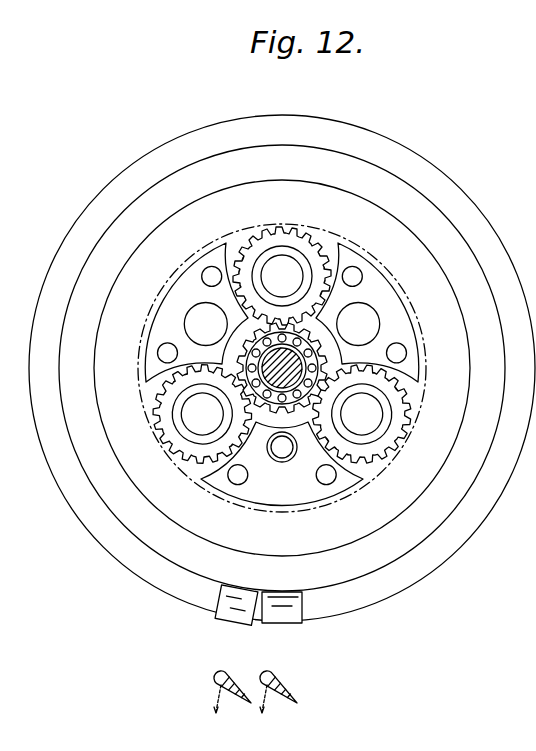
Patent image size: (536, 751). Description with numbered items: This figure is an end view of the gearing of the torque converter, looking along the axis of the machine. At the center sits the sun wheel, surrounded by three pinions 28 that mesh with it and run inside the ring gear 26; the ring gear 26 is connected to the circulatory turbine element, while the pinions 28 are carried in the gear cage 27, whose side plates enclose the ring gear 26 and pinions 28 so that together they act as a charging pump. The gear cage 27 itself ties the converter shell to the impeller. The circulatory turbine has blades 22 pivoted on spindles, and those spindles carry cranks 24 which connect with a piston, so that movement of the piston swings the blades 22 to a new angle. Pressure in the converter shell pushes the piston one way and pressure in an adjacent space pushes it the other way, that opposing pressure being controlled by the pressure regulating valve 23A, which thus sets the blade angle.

The blades 22 is at (287, 673).
The pressure regulating valve 23A is at (283, 456).
The cranks 24 is at (244, 346).
The ring gear 26 is at (291, 499).
The gear cage 27 is at (148, 392).
The pinions 28 is at (363, 472).